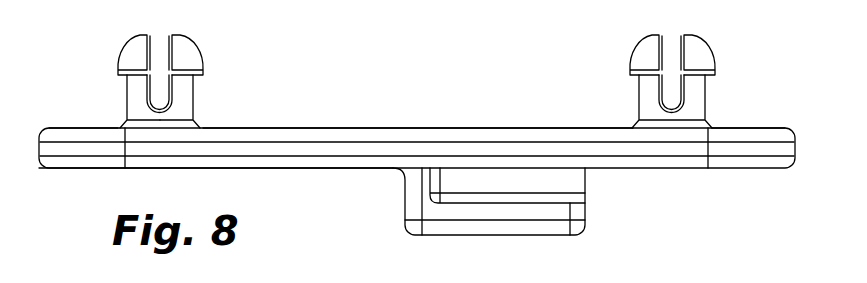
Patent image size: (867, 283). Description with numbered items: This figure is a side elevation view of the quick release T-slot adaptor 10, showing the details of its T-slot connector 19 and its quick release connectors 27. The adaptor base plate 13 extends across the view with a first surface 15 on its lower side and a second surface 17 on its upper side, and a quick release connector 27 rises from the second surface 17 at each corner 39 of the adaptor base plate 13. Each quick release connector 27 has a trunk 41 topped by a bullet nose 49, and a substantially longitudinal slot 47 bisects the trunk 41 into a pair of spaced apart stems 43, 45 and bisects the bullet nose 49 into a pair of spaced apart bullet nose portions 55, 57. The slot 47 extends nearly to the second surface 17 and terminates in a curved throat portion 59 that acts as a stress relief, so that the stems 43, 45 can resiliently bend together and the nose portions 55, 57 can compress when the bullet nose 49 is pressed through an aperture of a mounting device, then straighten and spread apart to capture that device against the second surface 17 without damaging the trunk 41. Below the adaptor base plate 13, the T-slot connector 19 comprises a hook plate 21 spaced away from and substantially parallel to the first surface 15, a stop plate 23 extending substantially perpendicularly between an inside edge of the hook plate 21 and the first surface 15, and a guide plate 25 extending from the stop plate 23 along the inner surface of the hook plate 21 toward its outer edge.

The T-slot adaptor 10 is at (388, 60).
The adaptor base plate 13 is at (753, 172).
The first surface 15 is at (318, 170).
The second surface 17 is at (477, 127).
The T-slot connector 19 is at (580, 228).
The hook plate 21 is at (447, 237).
The stop plate 23 is at (403, 195).
The guide plate 25 is at (582, 180).
The quick release connector 27 is at (187, 40).
The corner 39 is at (83, 127).
The trunk 41 is at (128, 98).
The stem 43 is at (132, 108).
The stem 45 is at (188, 103).
The longitudinal slot 47 is at (172, 92).
The bullet nose 49 is at (128, 43).
The bullet nose portion 55 is at (128, 57).
The bullet nose portion 57 is at (187, 57).
The curved throat portion 59 is at (167, 115).